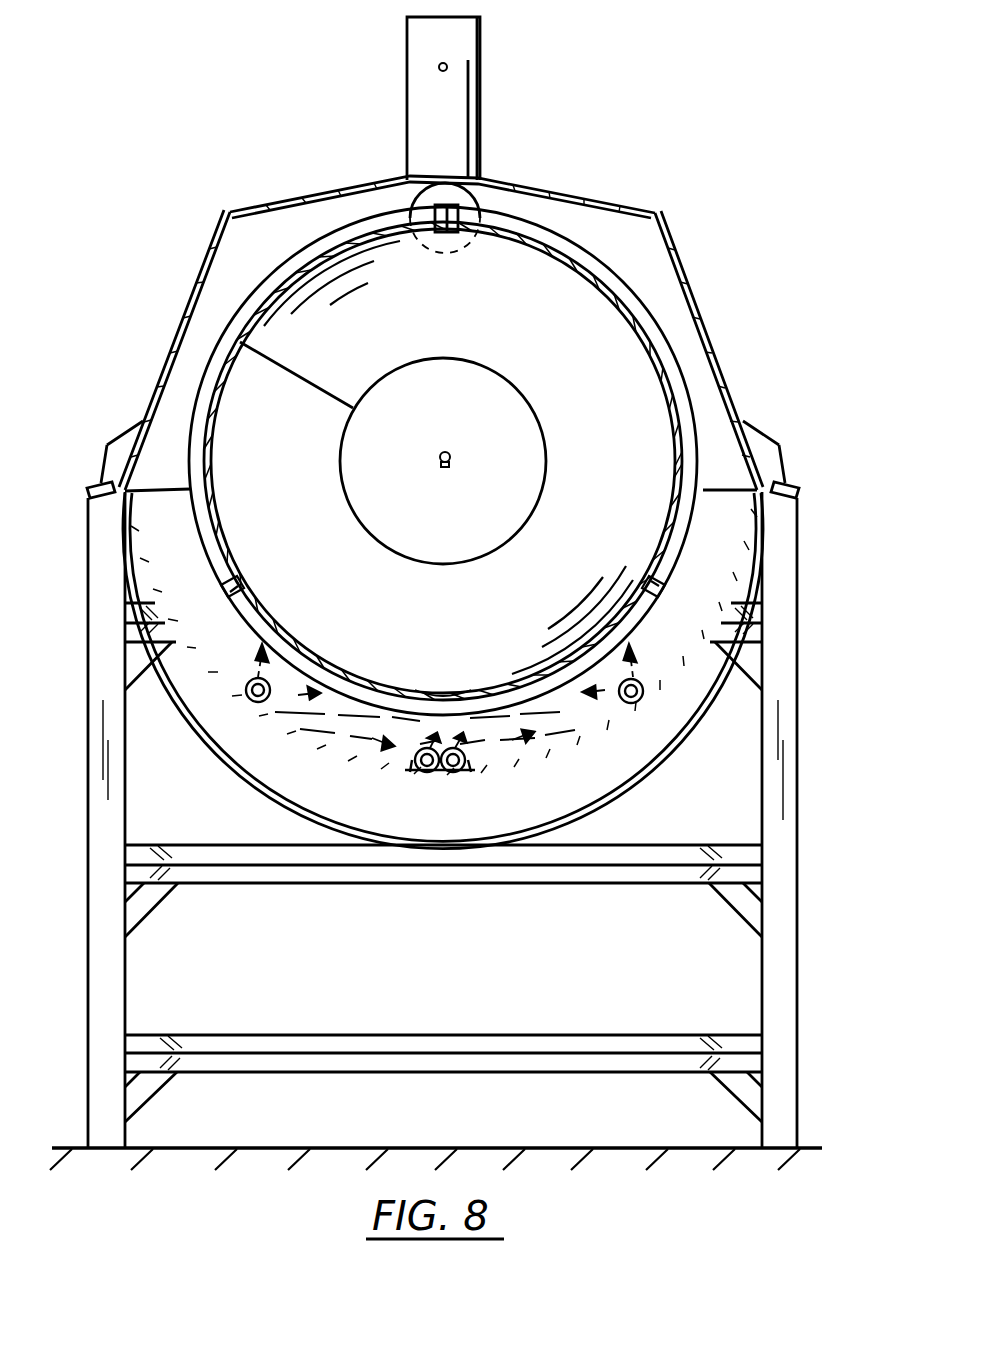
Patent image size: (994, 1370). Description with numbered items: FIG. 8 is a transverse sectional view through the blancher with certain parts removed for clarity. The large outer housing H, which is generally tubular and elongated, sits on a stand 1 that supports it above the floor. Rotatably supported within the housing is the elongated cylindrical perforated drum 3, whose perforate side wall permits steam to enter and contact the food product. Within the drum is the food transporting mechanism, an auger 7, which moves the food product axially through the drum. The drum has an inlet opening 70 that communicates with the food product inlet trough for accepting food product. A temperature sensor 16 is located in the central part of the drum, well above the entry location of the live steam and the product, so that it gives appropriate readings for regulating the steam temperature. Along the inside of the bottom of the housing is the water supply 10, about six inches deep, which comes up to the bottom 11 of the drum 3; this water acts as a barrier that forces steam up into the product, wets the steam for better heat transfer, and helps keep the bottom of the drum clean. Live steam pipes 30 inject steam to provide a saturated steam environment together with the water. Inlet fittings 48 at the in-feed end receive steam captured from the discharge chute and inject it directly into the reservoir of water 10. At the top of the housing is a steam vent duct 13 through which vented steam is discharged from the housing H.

The stand 1 is at (792, 790).
The perforated drum 3 is at (663, 354).
The auger 7 is at (333, 268).
The water supply 10 is at (558, 718).
The bottom of the drum 11 is at (452, 702).
The steam vent duct 13 is at (470, 115).
The temperature sensor 16 is at (451, 462).
The live steam pipes 30 is at (645, 692).
The inlet fittings 48 is at (456, 774).
The inlet opening 70 is at (468, 422).
The outer housing H is at (668, 221).